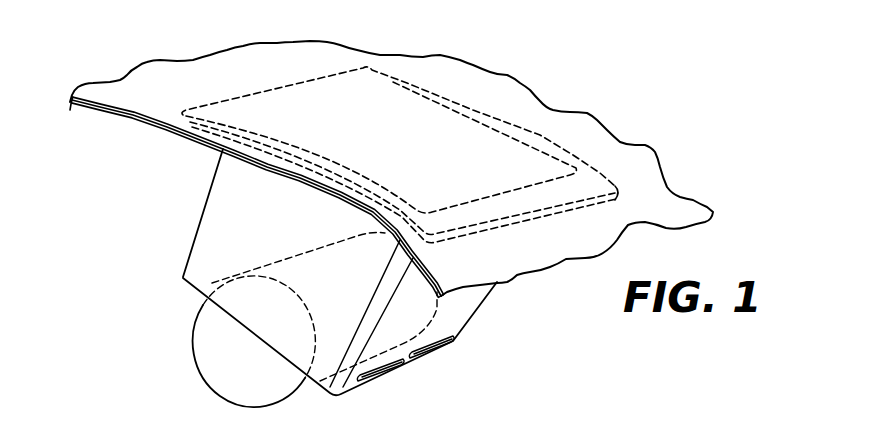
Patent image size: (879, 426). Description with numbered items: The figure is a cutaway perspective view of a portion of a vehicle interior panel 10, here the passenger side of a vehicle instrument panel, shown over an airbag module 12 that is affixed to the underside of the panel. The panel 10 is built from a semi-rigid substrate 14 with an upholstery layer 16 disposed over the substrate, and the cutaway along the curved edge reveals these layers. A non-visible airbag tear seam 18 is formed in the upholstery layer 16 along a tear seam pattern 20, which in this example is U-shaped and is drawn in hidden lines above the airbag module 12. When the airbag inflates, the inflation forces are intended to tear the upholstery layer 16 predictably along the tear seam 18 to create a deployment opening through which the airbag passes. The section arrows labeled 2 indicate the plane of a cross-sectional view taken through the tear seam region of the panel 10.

The vehicle interior panel 10 is at (543, 47).
The airbag module 12 is at (217, 257).
The semi-rigid substrate 14 is at (128, 112).
The upholstery layer 16 is at (682, 206).
The airbag tear seam 18 is at (486, 214).
The tear seam pattern 20 is at (287, 137).
The section line 2- 2 is at (472, 170).